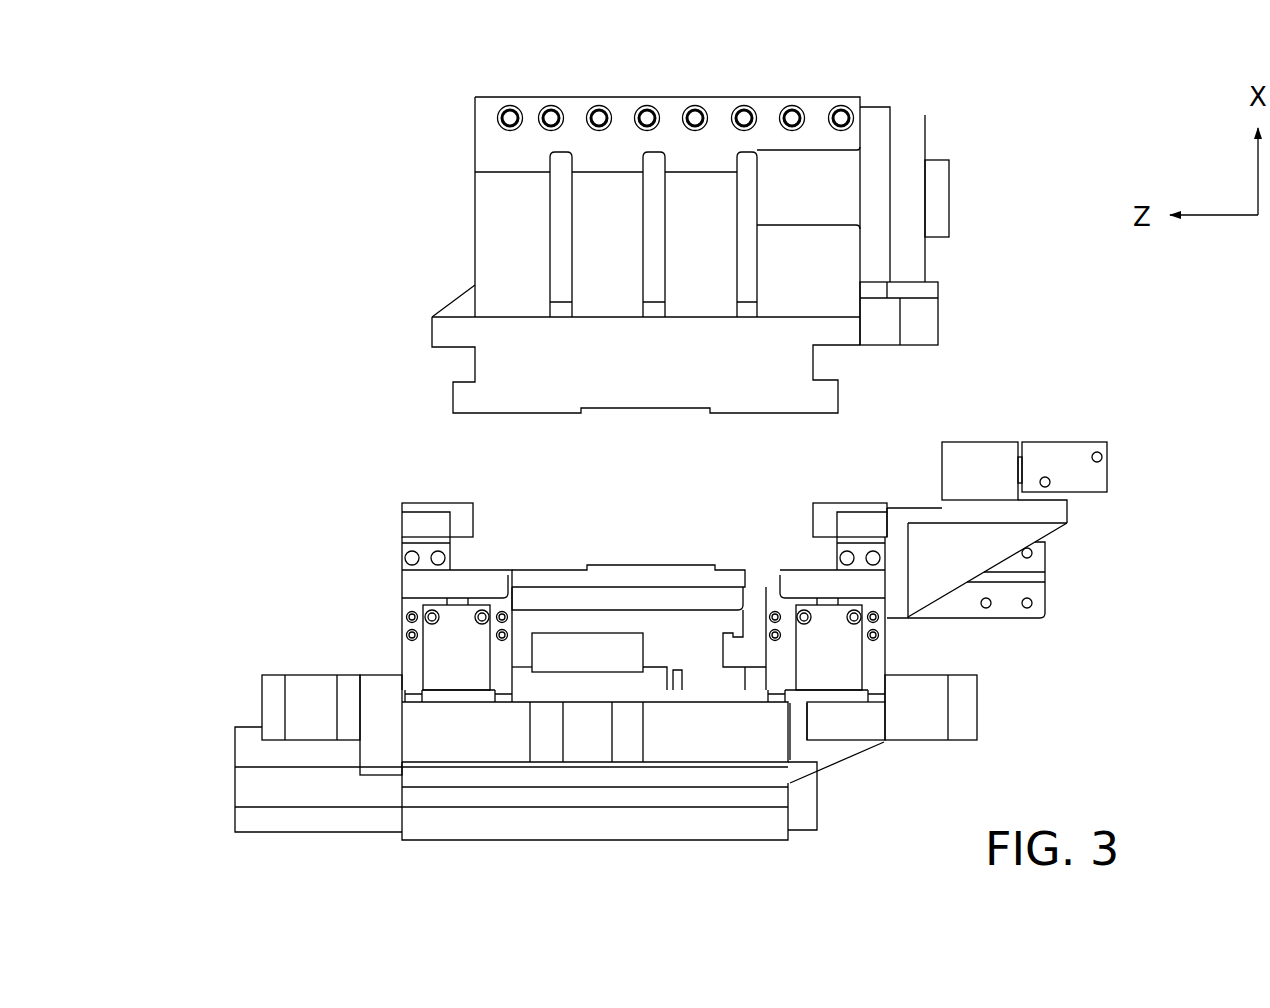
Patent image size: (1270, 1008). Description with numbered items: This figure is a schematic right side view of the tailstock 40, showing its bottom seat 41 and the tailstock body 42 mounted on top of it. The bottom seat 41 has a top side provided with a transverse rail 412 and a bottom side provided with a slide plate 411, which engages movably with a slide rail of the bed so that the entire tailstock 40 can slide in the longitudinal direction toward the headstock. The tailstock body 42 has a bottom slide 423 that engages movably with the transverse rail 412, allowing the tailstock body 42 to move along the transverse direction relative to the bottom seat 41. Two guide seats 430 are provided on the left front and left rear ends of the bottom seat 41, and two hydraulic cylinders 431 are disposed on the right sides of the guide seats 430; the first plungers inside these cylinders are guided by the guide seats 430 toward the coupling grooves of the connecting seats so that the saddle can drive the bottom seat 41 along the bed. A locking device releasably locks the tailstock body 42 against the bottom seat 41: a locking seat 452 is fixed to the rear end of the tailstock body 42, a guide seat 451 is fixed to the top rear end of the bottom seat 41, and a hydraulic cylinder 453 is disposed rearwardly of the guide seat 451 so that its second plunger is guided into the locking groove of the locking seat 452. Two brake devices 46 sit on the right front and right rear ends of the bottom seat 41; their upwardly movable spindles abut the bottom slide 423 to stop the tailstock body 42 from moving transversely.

The tailstock 40 is at (900, 91).
The tailstock body 42 is at (868, 174).
The bottom slide 423 is at (824, 404).
The locking seat 452 is at (934, 312).
The guide seat 451 is at (993, 454).
The hydraulic cylinder 453 is at (1072, 453).
The transverse rail 412 is at (801, 568).
The brake device 46 is at (448, 643).
The bottom seat 41 is at (790, 745).
The slide plate 411 is at (772, 825).
The guide seat 430 is at (268, 690).
The hydraulic cylinder 431 is at (310, 690).